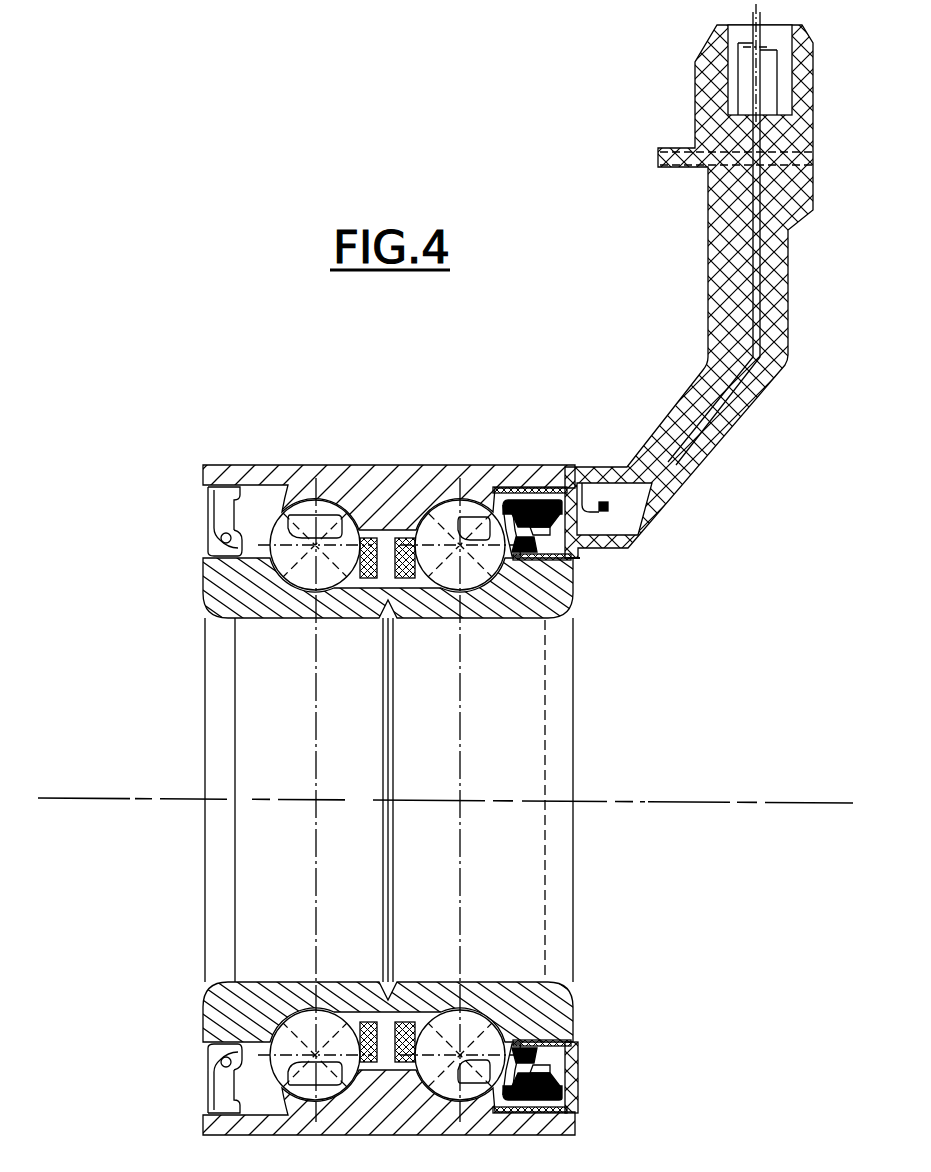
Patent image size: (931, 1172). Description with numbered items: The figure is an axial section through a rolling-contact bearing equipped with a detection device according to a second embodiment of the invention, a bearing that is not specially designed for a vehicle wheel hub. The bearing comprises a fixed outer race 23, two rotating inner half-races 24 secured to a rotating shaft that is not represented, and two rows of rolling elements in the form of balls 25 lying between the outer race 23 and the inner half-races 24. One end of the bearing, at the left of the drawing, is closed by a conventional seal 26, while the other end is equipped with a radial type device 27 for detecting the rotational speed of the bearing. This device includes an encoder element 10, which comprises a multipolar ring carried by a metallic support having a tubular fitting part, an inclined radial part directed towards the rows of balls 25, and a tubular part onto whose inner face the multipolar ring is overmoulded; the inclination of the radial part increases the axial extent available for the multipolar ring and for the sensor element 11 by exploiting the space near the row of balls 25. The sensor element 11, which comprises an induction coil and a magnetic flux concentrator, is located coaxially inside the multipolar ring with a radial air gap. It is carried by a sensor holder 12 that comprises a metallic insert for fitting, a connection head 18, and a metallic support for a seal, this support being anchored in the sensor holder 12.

The encoder element 10 is at (512, 502).
The sensor element 11 is at (568, 560).
The sensor holder 12 is at (617, 552).
The connection head 18 is at (673, 430).
The fixed outer race 23 is at (388, 492).
The rotating inner half-races 24 is at (295, 578).
The balls 25 is at (325, 577).
The seal 26 is at (210, 510).
The radial type device for detecting the rotational speed 27 is at (580, 557).